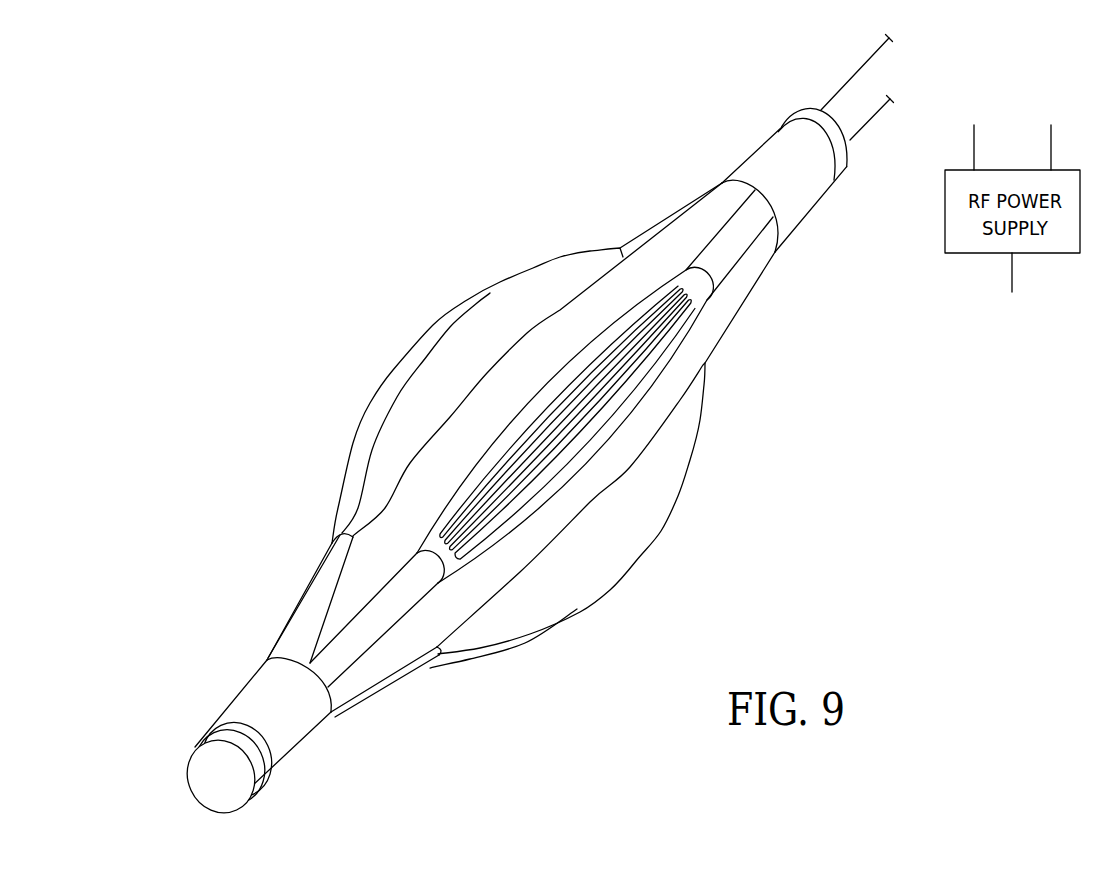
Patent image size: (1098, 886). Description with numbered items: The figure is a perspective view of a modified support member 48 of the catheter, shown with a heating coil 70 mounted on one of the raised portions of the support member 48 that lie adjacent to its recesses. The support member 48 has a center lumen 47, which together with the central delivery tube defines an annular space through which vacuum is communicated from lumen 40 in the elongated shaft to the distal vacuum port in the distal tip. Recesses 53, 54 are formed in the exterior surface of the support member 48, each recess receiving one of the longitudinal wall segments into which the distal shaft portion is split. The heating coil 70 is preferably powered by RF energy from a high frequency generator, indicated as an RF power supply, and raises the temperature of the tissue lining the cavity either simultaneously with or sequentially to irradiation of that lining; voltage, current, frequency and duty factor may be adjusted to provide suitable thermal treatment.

The lumen 40 is at (637, 393).
The center lumen 47 is at (213, 780).
The support member 48 is at (533, 263).
The recess 53 is at (452, 458).
The recess 54 is at (543, 527).
The heating coil 70 is at (877, 108).